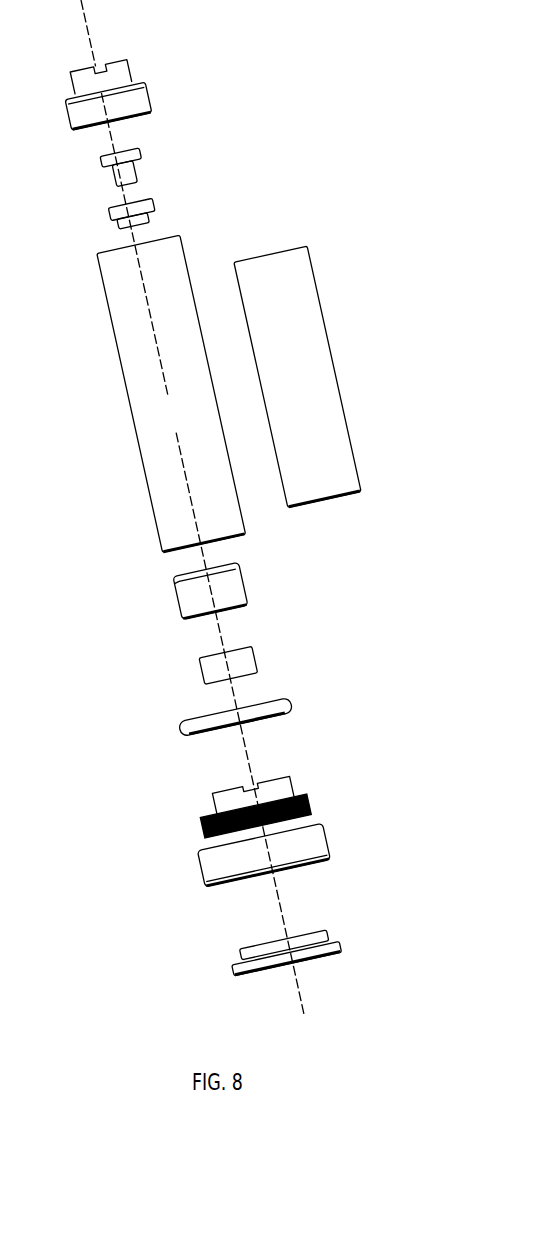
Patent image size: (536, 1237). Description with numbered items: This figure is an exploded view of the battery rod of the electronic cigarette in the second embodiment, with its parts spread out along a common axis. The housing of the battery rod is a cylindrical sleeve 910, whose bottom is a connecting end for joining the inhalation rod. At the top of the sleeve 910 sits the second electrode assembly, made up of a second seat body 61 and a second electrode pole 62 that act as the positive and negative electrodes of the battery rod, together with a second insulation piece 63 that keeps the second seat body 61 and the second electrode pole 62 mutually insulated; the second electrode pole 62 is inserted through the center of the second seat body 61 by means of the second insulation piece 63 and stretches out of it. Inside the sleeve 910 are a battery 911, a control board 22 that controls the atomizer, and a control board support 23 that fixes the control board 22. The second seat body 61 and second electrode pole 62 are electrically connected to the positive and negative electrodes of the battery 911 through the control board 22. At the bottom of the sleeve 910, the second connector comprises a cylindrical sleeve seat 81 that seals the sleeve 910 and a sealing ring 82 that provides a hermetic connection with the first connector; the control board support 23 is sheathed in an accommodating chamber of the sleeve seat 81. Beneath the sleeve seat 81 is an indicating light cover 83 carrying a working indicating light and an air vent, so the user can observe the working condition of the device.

The second seat body 61 is at (128, 77).
The second electrode pole 62 is at (137, 167).
The second insulation piece 63 is at (157, 212).
The sleeve 910 is at (147, 273).
The battery 911 is at (287, 298).
The control board support 23 is at (235, 590).
The control board 22 is at (248, 663).
The sealing ring 82 is at (278, 710).
The sleeve seat 81 is at (310, 840).
The indicating light cover 83 is at (330, 937).